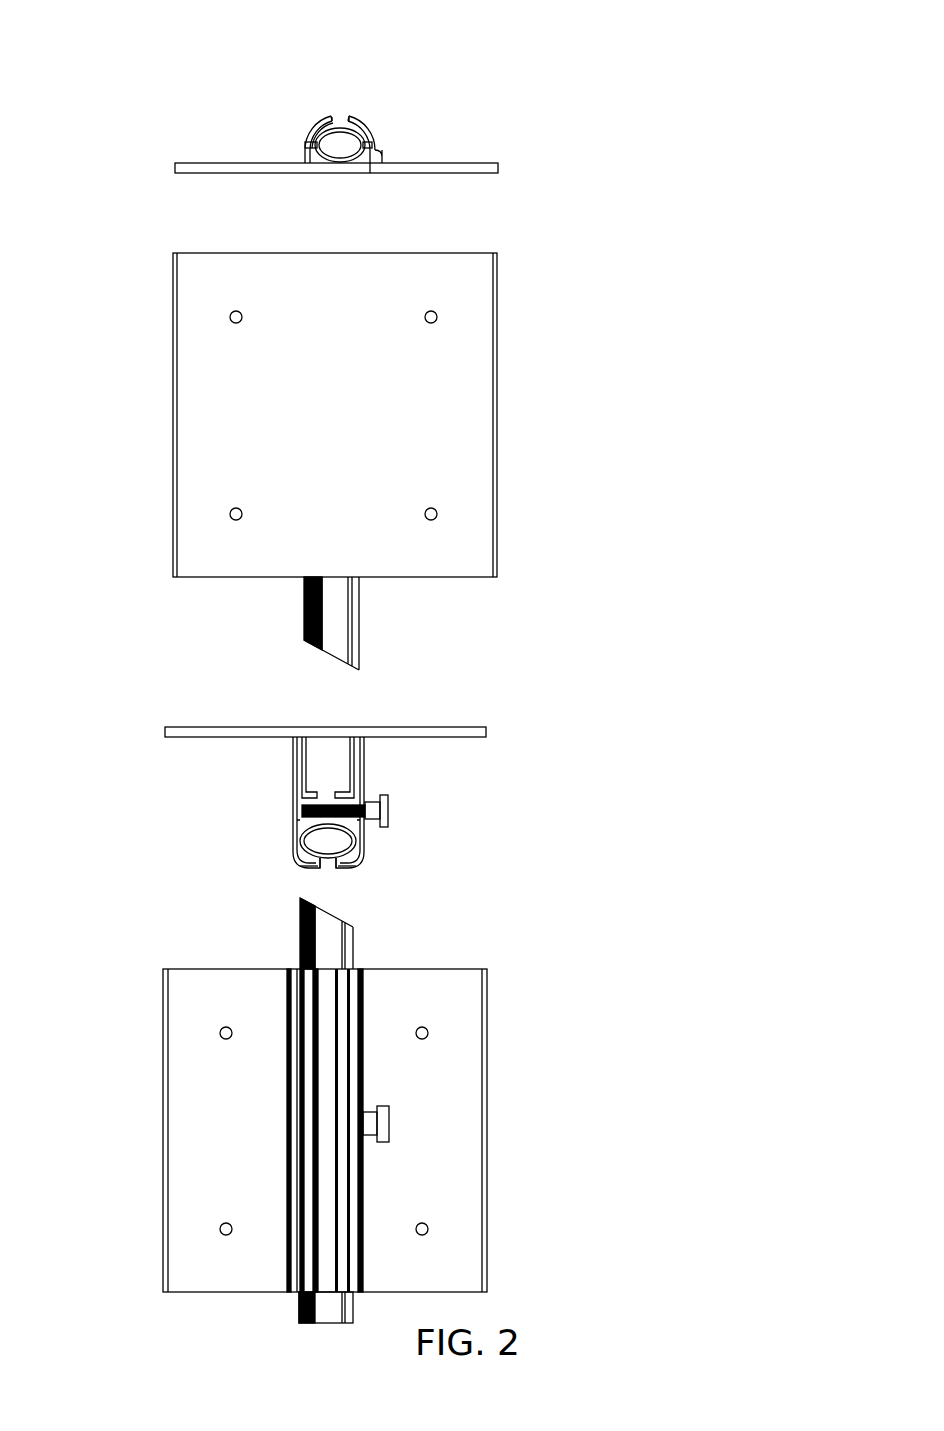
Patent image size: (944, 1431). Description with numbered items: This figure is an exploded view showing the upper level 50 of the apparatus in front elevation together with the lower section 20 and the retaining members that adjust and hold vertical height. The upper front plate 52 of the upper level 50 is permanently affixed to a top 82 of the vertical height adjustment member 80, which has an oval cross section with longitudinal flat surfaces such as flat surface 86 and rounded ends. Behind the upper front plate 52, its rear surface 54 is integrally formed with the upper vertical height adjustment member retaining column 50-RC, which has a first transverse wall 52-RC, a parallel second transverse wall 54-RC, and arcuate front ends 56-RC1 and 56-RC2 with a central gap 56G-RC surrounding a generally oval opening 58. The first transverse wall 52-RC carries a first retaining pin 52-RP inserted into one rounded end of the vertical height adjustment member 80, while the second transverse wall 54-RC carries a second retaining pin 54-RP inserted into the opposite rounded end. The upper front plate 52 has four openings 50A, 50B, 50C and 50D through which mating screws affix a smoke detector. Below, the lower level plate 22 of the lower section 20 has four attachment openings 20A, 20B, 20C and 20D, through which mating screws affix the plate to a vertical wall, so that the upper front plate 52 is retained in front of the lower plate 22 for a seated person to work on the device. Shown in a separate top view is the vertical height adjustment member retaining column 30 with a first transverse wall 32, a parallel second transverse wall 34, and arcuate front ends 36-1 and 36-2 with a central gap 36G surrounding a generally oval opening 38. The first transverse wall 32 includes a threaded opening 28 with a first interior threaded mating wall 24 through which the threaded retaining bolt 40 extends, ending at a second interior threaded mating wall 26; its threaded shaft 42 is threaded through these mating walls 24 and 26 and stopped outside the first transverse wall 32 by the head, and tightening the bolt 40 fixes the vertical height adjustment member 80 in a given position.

The lower section 20 is at (339, 1117).
The attachment opening 20A is at (220, 1033).
The attachment opening 20B is at (220, 1229).
The attachment opening 20C is at (428, 1033).
The attachment opening 20D is at (428, 1229).
The lower level plate 22 is at (470, 1105).
The first interior threaded mating wall 24 is at (348, 797).
The second interior threaded mating wall 26 is at (311, 797).
The threaded opening 28 is at (365, 828).
The vertical height adjustment member retaining column 30 is at (343, 793).
The first transverse wall 32 is at (366, 760).
The second transverse wall 34 is at (296, 760).
The arcuate front end 36-1 is at (365, 853).
The arcuate front end 36-2 is at (298, 860).
The central gap 36G is at (328, 868).
The generally oval opening 38 is at (313, 847).
The threaded retaining bolt 40 is at (389, 818).
The threaded shaft 42 is at (330, 802).
The upper level 50 is at (350, 392).
The opening 50A is at (437, 317).
The opening 50B is at (437, 514).
The opening 50C is at (230, 317).
The opening 50D is at (230, 514).
The upper vertical height adjustment member retaining column 50-RC is at (379, 103).
The upper front plate 52 is at (480, 412).
The first transverse wall 52-RC is at (380, 150).
The first retaining pin 52-RP is at (375, 142).
The rear surface 54 is at (493, 162).
The second transverse wall 54-RC is at (302, 150).
The second retaining pin 54-RP is at (300, 150).
The arcuate front end 56-RC1 is at (365, 128).
The arcuate front end 56-RC2 is at (320, 120).
The central gap 56G-RC is at (340, 125).
The generally oval opening 58 is at (356, 122).
The vertical height adjustment member 80 is at (341, 773).
The top 82 is at (304, 607).
The longitudinal flat surface 86 is at (300, 940).